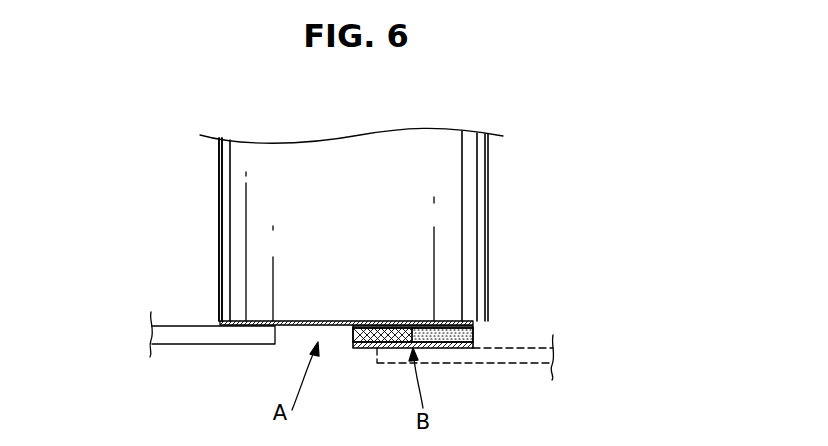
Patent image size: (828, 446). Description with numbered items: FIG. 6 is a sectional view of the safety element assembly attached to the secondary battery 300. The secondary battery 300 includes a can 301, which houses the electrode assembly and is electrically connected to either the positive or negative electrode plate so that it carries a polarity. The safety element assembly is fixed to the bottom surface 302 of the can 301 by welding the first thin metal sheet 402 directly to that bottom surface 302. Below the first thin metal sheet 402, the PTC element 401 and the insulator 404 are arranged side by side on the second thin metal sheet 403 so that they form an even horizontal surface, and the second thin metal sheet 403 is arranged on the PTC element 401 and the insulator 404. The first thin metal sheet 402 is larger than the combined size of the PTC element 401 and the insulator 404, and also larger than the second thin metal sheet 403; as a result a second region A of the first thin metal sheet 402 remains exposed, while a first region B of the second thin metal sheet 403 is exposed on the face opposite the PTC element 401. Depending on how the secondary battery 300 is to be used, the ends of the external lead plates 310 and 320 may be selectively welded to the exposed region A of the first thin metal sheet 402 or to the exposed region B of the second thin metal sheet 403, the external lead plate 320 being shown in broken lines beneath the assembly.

The secondary battery 300 is at (445, 185).
The can 301 is at (219, 187).
The bottom surface 302 is at (217, 323).
The external lead plate 310 is at (210, 344).
The external lead plate 320 is at (498, 363).
The PTC element 401 is at (477, 337).
The first thin metal sheet 402 is at (480, 324).
The second thin metal sheet 403 is at (368, 348).
The insulator 404 is at (353, 344).